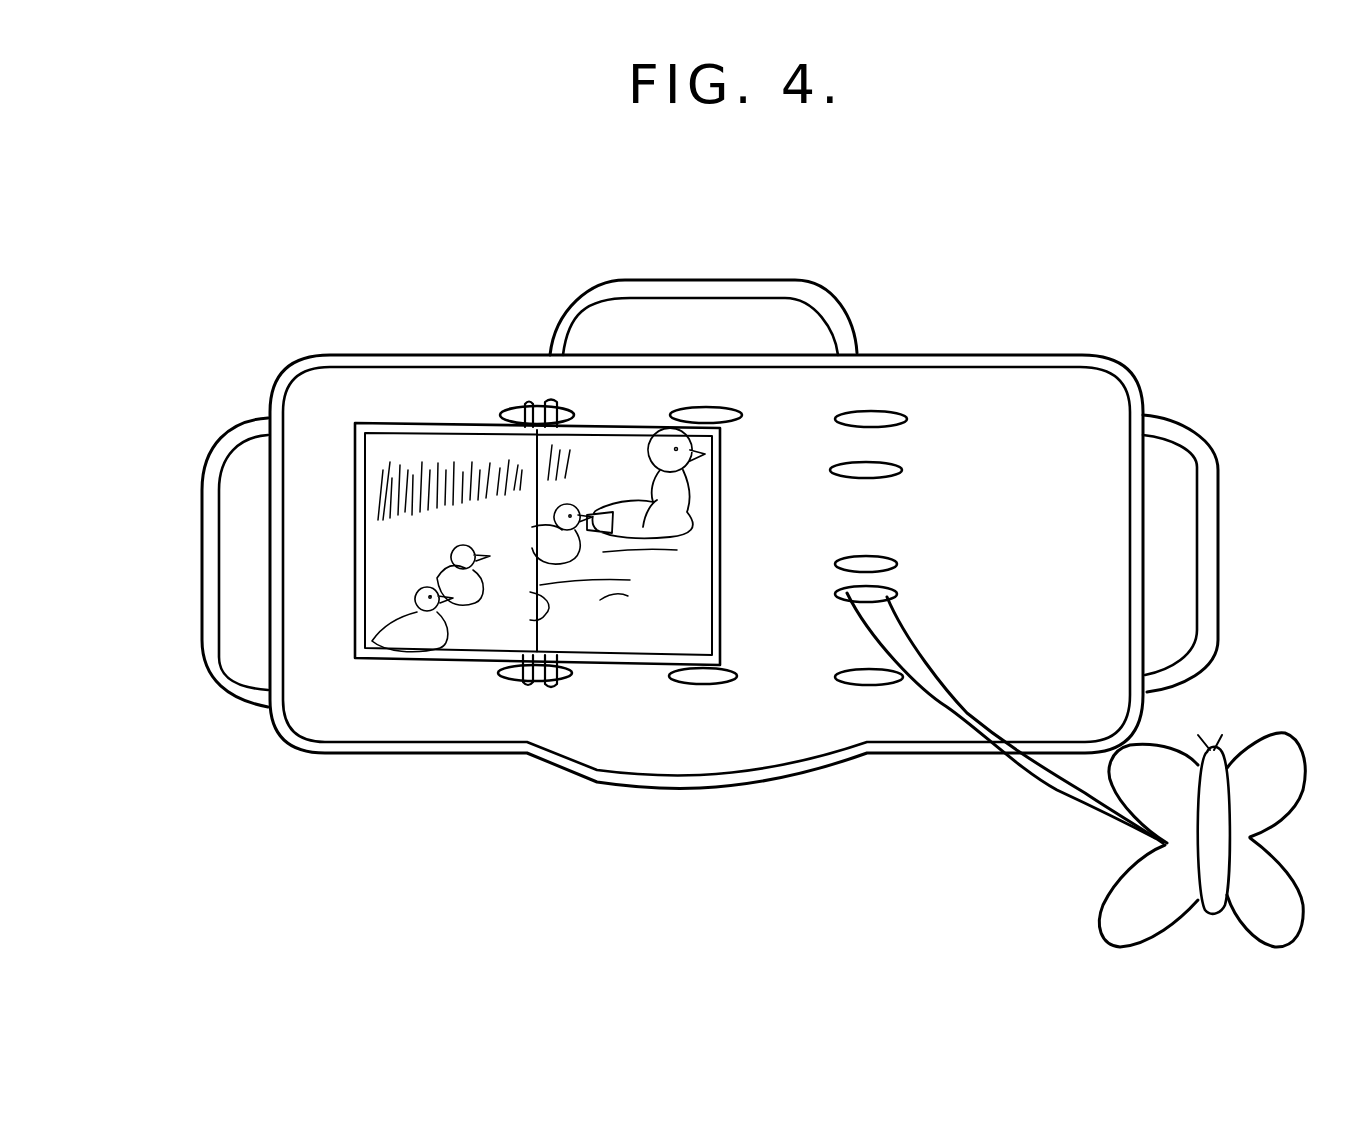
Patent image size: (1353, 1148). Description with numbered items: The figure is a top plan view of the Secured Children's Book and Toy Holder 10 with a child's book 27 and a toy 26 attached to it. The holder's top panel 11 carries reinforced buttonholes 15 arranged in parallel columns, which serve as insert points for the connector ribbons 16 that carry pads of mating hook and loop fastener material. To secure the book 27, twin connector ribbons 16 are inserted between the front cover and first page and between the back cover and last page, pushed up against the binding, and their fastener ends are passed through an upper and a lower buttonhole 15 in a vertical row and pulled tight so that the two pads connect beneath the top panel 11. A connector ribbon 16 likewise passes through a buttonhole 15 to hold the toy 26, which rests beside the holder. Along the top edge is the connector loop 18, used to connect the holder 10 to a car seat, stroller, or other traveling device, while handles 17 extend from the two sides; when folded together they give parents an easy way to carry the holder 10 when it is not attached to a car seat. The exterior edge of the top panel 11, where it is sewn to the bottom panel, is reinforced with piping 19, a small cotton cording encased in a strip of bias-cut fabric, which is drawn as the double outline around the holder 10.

The Secured Children's Book and Toy Holder 10 is at (355, 328).
The top panel 11 is at (797, 549).
The reinforced buttonholes 15 is at (910, 417).
The connector ribbons 16 is at (547, 420).
The handles 17 is at (220, 524).
The connector loop 18 is at (810, 297).
The piping 19 is at (1013, 360).
The toy 26 is at (1157, 862).
The child's book 27 is at (470, 630).